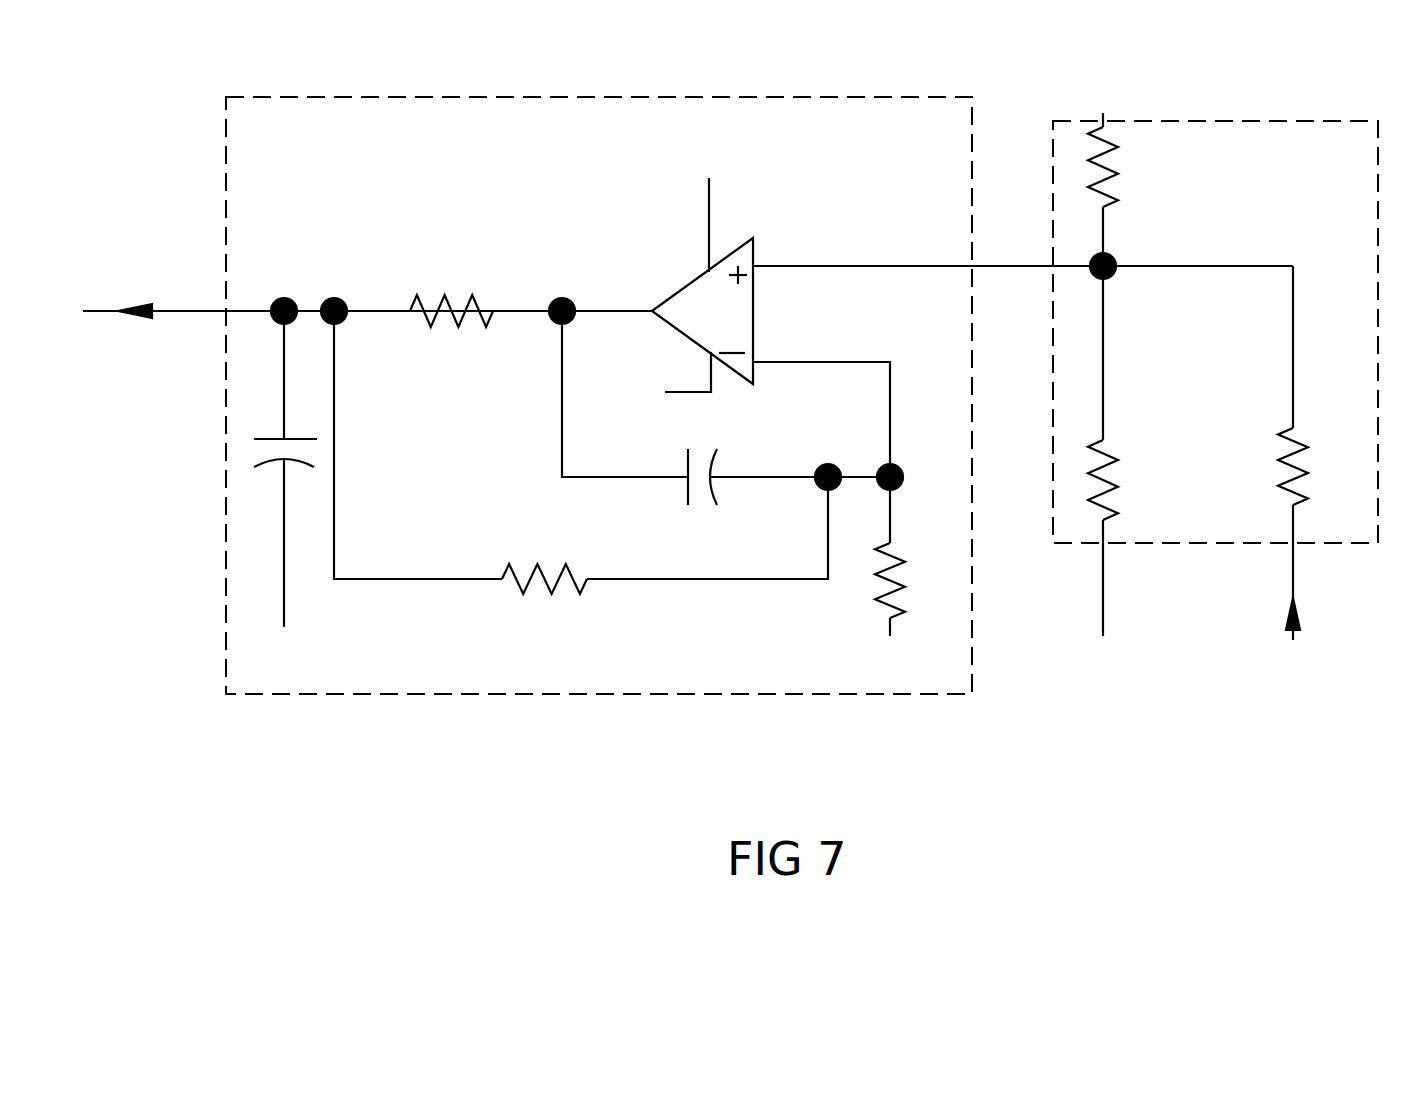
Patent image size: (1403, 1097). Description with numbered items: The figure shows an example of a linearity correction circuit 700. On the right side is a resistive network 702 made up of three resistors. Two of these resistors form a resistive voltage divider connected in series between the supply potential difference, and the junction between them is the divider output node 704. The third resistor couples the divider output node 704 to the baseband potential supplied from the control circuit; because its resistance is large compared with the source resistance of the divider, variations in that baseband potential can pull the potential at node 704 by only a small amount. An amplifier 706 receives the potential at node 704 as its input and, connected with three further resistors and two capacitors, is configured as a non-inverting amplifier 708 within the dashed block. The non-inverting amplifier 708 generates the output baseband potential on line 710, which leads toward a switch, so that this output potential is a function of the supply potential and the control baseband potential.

The linearity correction circuit 700 is at (730, 466).
The resistive network 702 is at (1215, 412).
The divider output node 704 is at (1111, 257).
The amplifier 706 is at (738, 249).
The non-inverting amplifier 708 is at (562, 372).
The line 710 is at (176, 314).